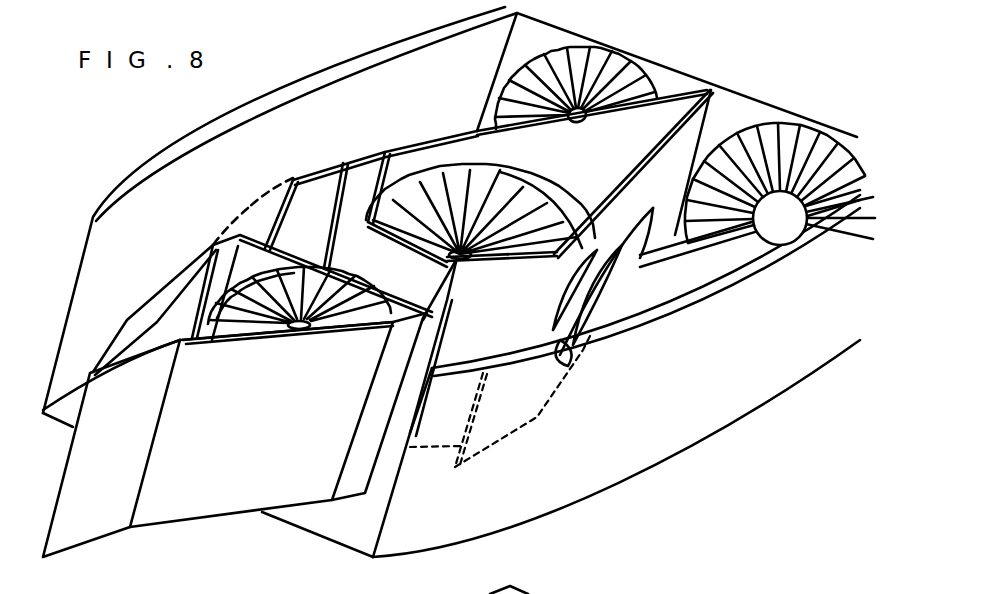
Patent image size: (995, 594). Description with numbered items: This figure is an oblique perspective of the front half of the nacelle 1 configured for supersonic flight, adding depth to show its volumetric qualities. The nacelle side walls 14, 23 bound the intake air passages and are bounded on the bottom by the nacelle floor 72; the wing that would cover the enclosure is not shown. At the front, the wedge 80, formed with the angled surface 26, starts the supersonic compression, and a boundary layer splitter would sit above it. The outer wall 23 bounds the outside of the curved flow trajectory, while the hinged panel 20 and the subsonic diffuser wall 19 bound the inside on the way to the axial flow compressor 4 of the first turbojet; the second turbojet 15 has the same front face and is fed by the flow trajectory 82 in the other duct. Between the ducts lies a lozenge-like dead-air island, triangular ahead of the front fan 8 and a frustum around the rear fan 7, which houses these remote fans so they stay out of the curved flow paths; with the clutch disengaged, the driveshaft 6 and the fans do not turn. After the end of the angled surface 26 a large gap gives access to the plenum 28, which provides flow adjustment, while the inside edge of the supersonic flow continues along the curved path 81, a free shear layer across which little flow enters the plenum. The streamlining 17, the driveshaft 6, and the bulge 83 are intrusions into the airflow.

The nacelle 1 is at (809, 416).
The axial flow compressor 4 is at (803, 133).
The driveshaft 6 is at (672, 243).
The rear fan 7 is at (447, 195).
The front fan 8 is at (277, 285).
The nacelle side wall 14 is at (312, 82).
The second turbojet 15 is at (600, 60).
The streamlining 17 is at (623, 260).
The subsonic diffuser wall 19 is at (684, 183).
The hinged panel 20 is at (493, 337).
The nacelle side wall 23 is at (662, 433).
The angled surface 26 is at (190, 270).
The plenum 28 is at (371, 199).
The nacelle floor 72 is at (330, 521).
The wedge 80 is at (164, 547).
The curved flow path edge 81 is at (237, 220).
The flow trajectory 82 is at (270, 175).
The bulge 83 is at (584, 292).